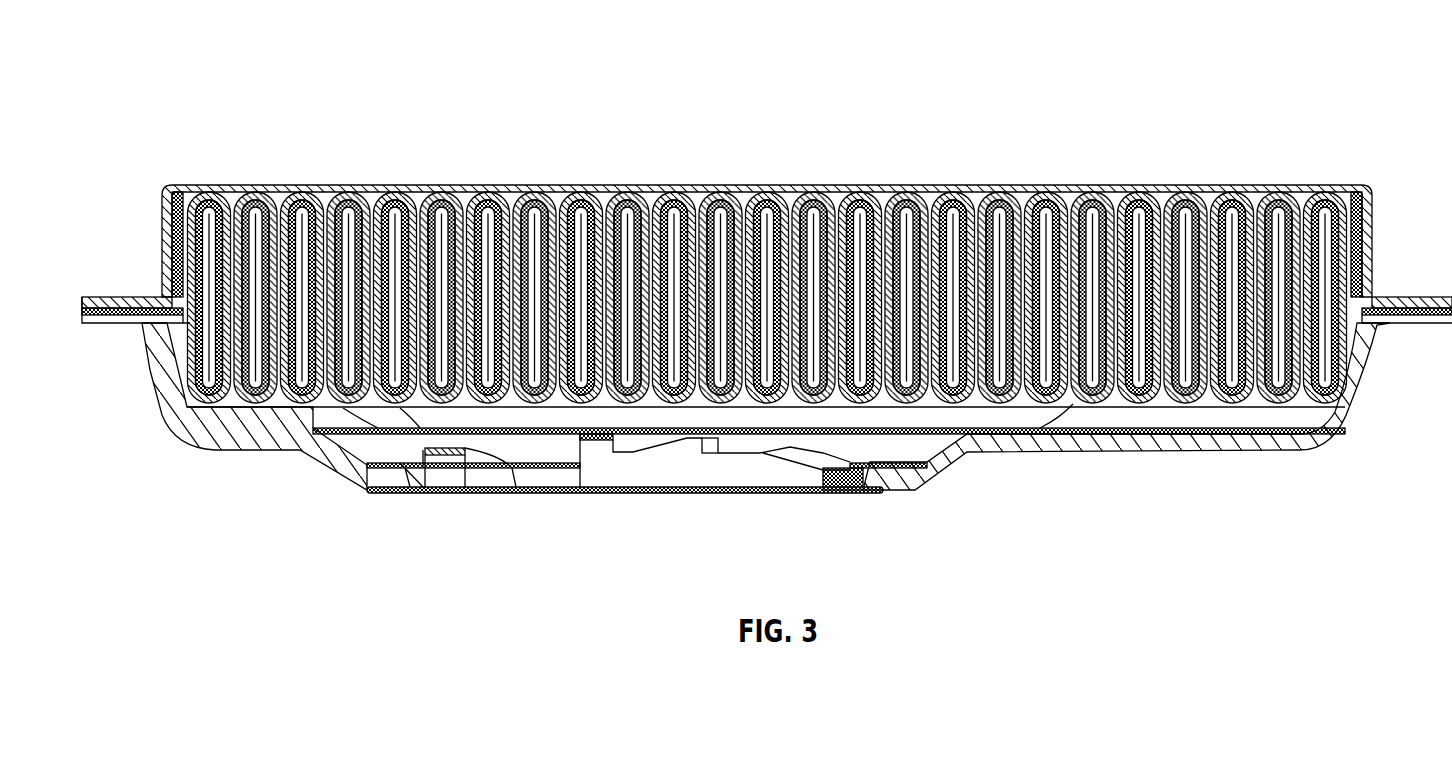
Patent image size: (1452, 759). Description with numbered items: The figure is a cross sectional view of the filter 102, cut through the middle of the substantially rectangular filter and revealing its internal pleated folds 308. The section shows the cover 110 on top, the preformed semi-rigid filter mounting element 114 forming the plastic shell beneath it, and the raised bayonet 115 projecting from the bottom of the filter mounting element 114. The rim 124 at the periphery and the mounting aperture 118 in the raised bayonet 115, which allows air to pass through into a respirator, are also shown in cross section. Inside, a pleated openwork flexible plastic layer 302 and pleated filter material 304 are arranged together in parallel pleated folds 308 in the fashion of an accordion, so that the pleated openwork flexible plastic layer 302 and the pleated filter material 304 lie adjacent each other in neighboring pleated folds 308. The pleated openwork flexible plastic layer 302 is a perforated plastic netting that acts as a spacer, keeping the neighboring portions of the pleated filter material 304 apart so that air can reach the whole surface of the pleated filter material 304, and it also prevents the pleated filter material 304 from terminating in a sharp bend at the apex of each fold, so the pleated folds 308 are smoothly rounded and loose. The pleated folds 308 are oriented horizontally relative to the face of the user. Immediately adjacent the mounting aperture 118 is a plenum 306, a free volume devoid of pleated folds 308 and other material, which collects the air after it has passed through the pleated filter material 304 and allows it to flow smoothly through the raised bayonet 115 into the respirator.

The filter 102 is at (207, 73).
The cover 110 is at (767, 260).
The filter mounting element 114 is at (228, 450).
The raised bayonet 115 is at (392, 487).
The mounting aperture 118 is at (648, 494).
The rim 124 is at (113, 318).
The pleated openwork flexible plastic layer 302 is at (1093, 400).
The pleated filter material 304 is at (930, 190).
The plenum 306 is at (737, 408).
The pleated folds 308 is at (1133, 230).